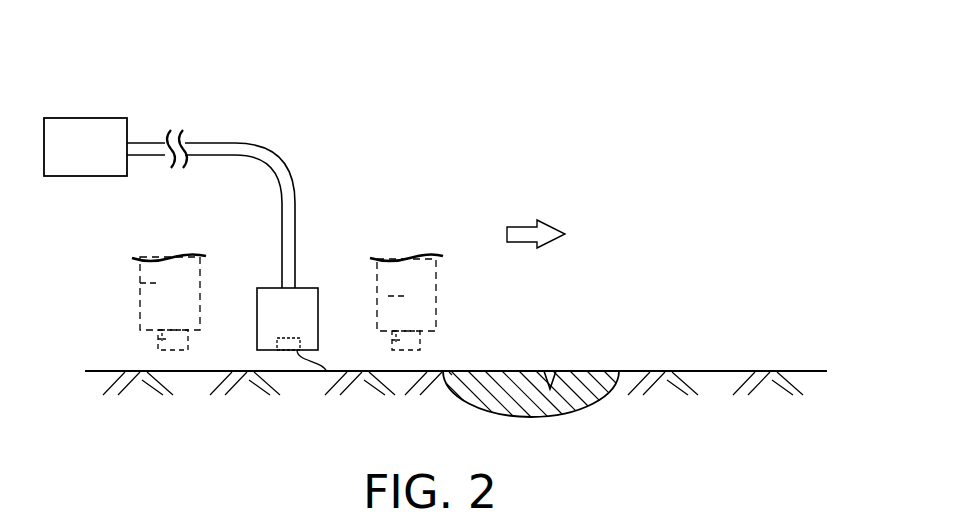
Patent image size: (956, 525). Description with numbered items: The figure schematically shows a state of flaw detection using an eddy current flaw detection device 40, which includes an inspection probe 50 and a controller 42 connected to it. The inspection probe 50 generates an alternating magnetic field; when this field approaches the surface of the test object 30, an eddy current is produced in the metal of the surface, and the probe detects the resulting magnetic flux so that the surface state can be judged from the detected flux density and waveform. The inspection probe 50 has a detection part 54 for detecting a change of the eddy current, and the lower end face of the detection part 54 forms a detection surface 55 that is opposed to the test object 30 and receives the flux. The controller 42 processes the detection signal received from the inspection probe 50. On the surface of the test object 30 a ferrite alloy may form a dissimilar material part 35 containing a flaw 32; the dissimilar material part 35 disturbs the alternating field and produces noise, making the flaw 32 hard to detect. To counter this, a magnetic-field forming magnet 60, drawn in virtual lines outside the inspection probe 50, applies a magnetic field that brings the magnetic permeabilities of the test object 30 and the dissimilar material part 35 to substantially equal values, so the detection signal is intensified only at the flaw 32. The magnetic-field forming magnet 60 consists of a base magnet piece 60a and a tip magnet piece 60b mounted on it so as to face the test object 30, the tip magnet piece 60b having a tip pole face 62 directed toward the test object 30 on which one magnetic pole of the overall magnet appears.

The test object 30 is at (710, 371).
The flaw 32 is at (549, 371).
The dissimilar material part 35 is at (572, 378).
The eddy current flaw detection device 40 is at (265, 116).
The controller 42 is at (87, 118).
The inspection probe 50 is at (297, 288).
The detection part 54 is at (275, 345).
The detection surface 55 is at (316, 378).
The magnetic-field forming magnet 60 is at (128, 268).
The base magnet piece 60a is at (140, 283).
The tip magnet piece 60b is at (158, 340).
The tip pole face 62 is at (188, 350).